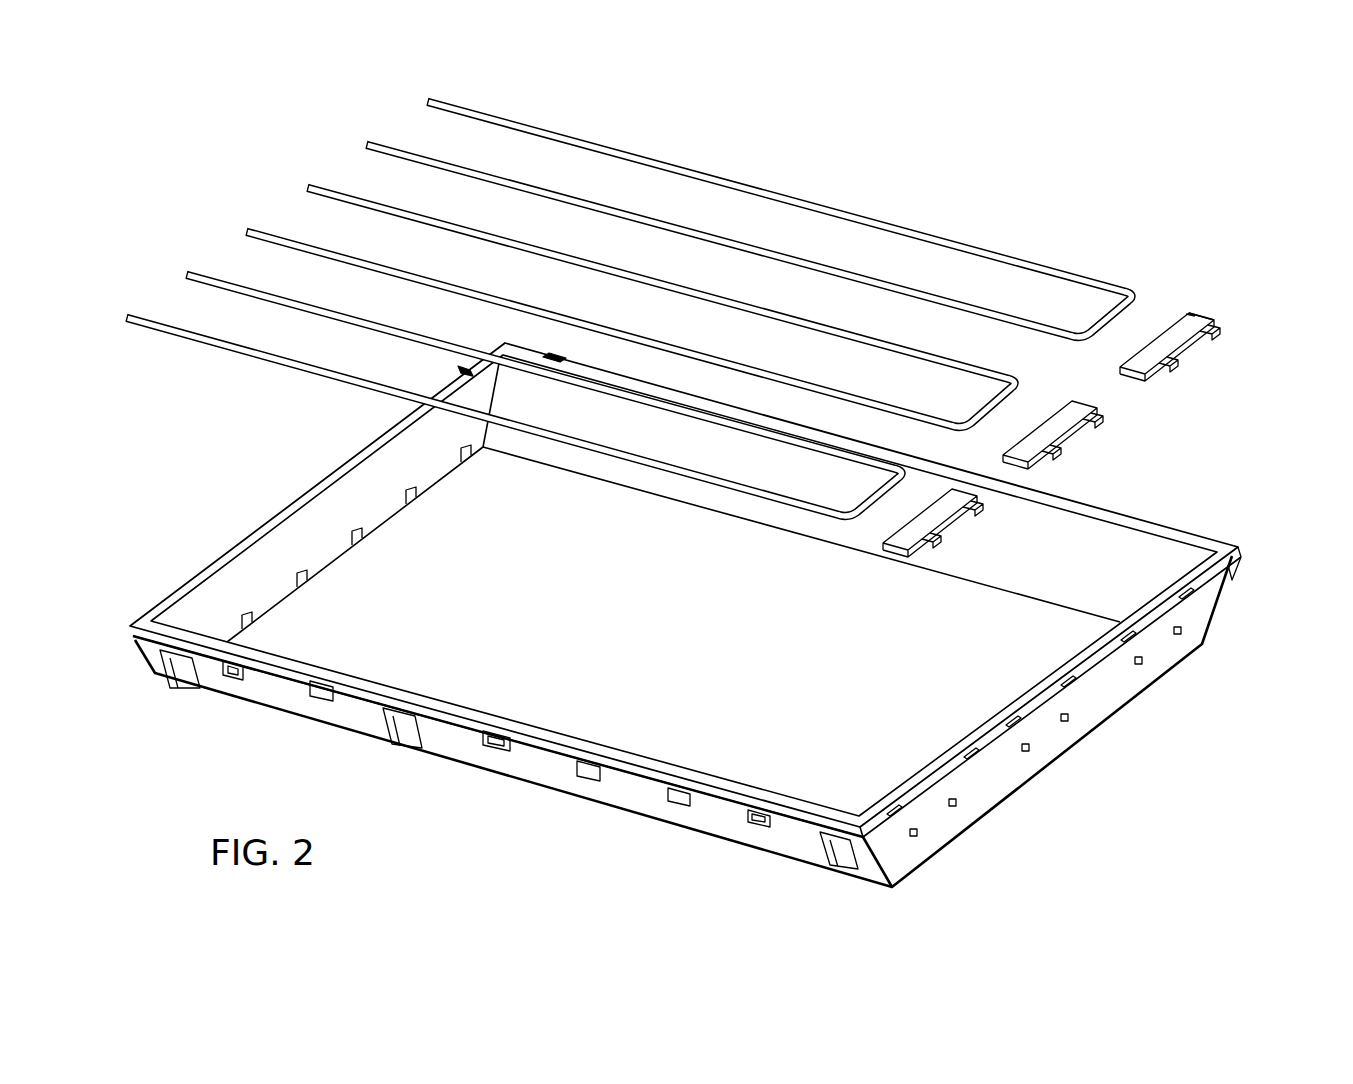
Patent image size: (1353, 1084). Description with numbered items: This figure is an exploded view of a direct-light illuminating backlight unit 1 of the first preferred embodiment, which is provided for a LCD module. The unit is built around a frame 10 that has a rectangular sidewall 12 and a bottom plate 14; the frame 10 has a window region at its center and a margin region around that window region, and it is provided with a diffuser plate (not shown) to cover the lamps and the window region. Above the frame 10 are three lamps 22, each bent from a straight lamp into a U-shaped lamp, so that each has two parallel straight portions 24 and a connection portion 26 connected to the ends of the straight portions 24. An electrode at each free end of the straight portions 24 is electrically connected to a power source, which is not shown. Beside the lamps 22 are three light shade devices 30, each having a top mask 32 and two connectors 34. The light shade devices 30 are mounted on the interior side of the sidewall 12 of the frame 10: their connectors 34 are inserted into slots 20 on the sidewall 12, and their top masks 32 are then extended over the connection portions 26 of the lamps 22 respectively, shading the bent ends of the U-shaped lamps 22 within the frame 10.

The direct-light illuminating backlight unit 1 is at (1109, 236).
The frame 10 is at (1192, 530).
The rectangular sidewall 12 is at (1195, 598).
The bottom plate 14 is at (765, 764).
The slots 20 is at (1182, 632).
The lamps 22 is at (569, 254).
The straight portions 24 is at (428, 96).
The connection portion 26 is at (993, 410).
The light shade devices 30 is at (1214, 319).
The top mask 32 is at (1195, 320).
The connectors 34 is at (1214, 336).